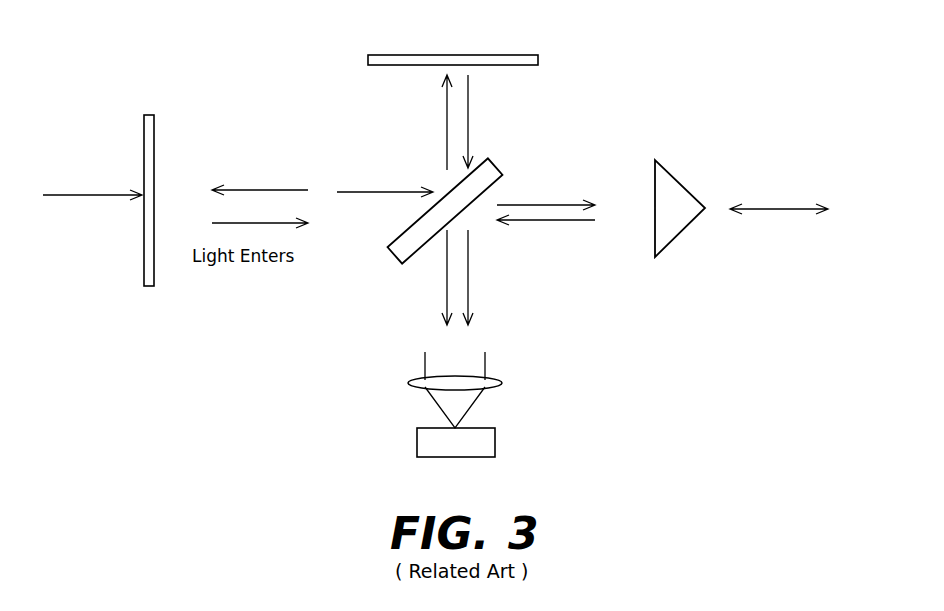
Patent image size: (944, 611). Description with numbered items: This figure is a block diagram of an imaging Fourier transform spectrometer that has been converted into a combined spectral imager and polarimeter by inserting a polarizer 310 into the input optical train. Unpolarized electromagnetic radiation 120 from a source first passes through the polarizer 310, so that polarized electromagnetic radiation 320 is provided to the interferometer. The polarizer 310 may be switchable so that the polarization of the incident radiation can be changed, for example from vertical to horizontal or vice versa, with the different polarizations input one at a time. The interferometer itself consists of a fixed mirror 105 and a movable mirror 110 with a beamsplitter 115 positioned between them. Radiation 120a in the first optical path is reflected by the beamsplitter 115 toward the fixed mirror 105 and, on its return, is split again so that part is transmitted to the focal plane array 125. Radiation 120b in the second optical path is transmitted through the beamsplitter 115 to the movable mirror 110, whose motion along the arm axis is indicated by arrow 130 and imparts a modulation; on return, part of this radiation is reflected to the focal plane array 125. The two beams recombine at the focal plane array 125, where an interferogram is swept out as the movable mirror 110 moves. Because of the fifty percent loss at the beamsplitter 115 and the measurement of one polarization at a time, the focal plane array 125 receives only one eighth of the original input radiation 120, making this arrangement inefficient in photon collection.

The fixed mirror 105 is at (538, 55).
The movable mirror 110 is at (685, 187).
The beamsplitter 115 is at (485, 160).
The electromagnetic radiation 120 is at (69, 197).
The radiation in first optical path 120a is at (414, 118).
The radiation in second optical path 120b is at (556, 234).
The focal plane array 125 is at (495, 428).
The arrow indicating motion of movable mirror 130 is at (775, 212).
The polarizer 310 is at (152, 113).
The polarized electromagnetic radiation 320 is at (268, 188).